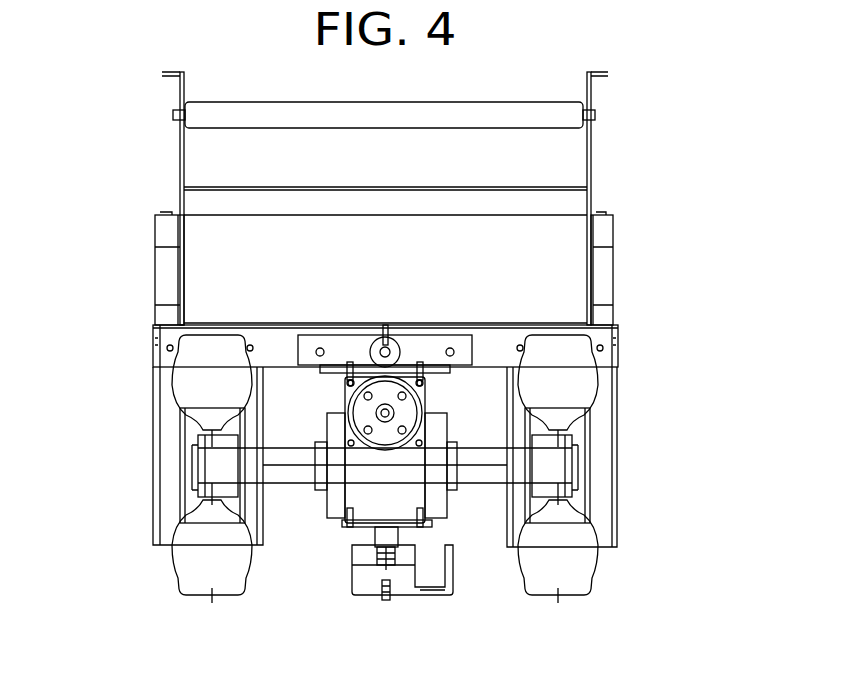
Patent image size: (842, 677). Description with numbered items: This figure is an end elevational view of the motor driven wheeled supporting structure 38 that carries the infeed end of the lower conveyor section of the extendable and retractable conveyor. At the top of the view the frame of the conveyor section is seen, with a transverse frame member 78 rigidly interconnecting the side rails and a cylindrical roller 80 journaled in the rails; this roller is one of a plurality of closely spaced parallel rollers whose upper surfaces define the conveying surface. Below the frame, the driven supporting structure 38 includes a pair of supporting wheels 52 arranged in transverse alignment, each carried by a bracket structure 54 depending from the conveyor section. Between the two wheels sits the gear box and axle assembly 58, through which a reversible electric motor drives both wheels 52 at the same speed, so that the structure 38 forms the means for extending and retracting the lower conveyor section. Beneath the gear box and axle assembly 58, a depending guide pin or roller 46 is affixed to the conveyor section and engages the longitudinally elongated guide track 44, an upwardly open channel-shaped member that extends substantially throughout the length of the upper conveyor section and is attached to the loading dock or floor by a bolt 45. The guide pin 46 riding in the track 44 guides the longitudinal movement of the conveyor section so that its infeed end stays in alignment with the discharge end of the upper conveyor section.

The motor driven wheeled supporting structure 38 is at (640, 408).
The guide track 44 is at (346, 591).
The bolt 45 is at (386, 598).
The guide pin or roller 46 is at (405, 558).
The supporting wheel 52 is at (192, 567).
The bracket structure 54 is at (160, 447).
The gear box and axle assembly 58 is at (335, 526).
The transverse frame member 78 is at (326, 207).
The cylindrical roller 80 is at (432, 118).